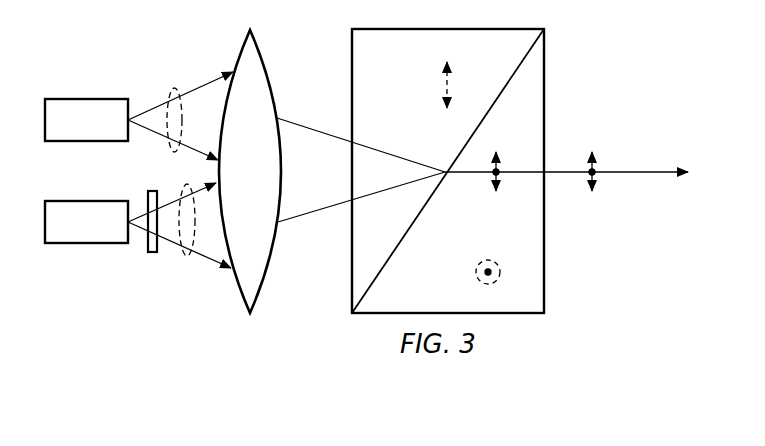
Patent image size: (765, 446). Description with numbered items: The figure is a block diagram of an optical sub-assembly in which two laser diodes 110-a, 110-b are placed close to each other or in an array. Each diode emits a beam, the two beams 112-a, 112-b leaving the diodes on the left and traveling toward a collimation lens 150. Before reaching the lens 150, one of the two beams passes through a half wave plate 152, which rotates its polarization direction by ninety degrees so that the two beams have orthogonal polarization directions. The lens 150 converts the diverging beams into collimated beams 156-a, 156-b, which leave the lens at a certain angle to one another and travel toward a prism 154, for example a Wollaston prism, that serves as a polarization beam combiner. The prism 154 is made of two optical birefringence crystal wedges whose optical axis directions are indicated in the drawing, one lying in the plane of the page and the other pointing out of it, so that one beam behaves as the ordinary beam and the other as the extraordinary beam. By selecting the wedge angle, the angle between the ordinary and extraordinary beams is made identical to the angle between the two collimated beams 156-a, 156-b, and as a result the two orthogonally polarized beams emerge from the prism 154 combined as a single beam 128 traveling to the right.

The laser diode 110-a is at (88, 99).
The laser diode 110-b is at (86, 244).
The beam 112-a is at (173, 89).
The beam 112-b is at (187, 256).
The collimation lens 150 is at (237, 63).
The half wave plate 152 is at (150, 192).
The prism 154 is at (545, 95).
The collimated beam 156-a is at (312, 134).
The collimated beam 156-b is at (310, 207).
The combined beam 128 is at (640, 171).